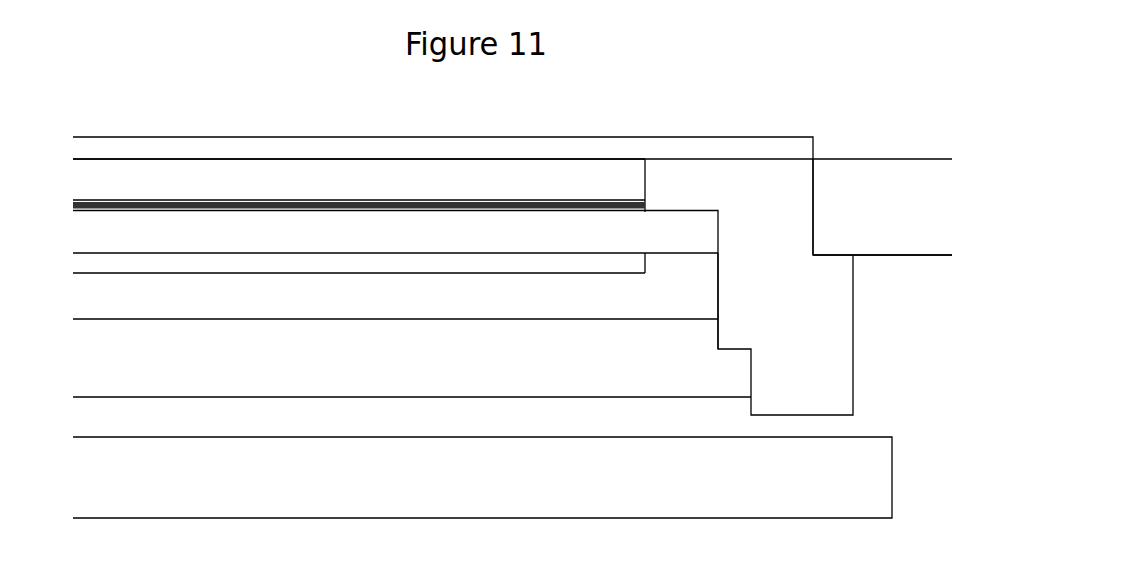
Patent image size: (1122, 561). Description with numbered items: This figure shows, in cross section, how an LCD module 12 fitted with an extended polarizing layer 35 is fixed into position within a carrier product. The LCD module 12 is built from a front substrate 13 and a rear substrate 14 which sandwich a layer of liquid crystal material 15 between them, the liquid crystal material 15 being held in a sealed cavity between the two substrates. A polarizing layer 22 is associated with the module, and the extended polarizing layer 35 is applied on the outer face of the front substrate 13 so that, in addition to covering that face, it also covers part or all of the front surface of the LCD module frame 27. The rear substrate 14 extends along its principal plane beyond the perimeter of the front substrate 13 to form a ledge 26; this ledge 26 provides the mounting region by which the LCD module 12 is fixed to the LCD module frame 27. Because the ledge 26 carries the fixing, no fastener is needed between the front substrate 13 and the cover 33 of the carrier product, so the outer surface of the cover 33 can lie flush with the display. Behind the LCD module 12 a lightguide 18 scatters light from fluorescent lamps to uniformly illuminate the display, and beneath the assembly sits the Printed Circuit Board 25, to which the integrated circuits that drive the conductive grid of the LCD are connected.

The LCD module 12 is at (208, 81).
The extended polarizing layer 35 is at (512, 196).
The front substrate 13 is at (359, 185).
The layer of liquid crystal material 15 is at (344, 206).
The rear substrate 14 is at (395, 280).
The polarizing layer 22 is at (359, 262).
The ledge 26 is at (713, 254).
The LCD module frame 27 is at (785, 328).
The cover 33 is at (882, 207).
The lightguide 18 is at (412, 358).
The Printed Circuit Board 25 is at (482, 477).